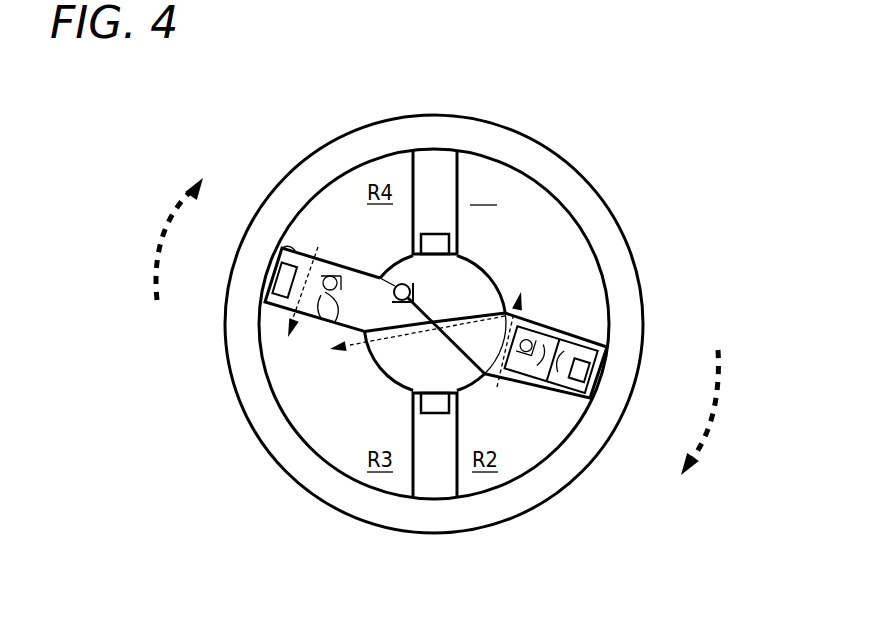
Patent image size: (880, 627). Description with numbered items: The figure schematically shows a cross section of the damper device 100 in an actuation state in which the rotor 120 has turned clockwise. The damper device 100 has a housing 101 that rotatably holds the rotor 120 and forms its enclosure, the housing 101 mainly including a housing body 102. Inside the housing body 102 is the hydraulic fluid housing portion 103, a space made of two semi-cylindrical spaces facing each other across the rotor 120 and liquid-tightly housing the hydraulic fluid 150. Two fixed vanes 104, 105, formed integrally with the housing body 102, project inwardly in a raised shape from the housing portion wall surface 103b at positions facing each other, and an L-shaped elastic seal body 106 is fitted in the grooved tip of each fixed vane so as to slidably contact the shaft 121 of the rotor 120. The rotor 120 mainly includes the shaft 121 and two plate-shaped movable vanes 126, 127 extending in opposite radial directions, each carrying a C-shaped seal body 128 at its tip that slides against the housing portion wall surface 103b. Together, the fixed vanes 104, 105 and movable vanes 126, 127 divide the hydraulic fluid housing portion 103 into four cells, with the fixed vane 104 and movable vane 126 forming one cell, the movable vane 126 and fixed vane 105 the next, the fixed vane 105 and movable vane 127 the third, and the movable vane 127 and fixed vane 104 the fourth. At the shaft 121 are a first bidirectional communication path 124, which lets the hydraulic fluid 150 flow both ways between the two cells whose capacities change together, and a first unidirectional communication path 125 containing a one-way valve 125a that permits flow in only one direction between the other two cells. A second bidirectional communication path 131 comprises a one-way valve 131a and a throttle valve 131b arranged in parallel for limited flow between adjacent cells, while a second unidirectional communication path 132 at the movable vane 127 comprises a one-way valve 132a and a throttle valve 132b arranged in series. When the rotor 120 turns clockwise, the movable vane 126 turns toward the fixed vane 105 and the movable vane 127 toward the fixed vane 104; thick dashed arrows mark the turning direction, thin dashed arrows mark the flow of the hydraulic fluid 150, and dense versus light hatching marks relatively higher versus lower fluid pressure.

The damper device 100 is at (278, 90).
The housing 101 is at (499, 118).
The housing body 102 is at (536, 135).
The hydraulic fluid housing portion 103 is at (306, 456).
The housing portion wall surface 103b is at (528, 462).
The fixed vane 104 is at (398, 152).
The fixed vane 105 is at (461, 485).
The seal body 106 is at (434, 232).
The rotor 120 is at (405, 394).
The shaft 121 is at (390, 375).
The first bidirectional communication path 124 is at (495, 290).
The first unidirectional communication path 125 is at (413, 290).
The one-way valve 125a is at (395, 285).
The movable vane 126 is at (576, 402).
The movable vane 127 is at (285, 245).
The seal body 128 is at (263, 283).
The second bidirectional communication path 131 is at (723, 257).
The one-way valve 131a is at (578, 330).
The throttle valve 131b is at (603, 350).
The second unidirectional communication path 132 is at (147, 338).
The one-way valve 132a is at (333, 322).
The throttle valve 132b is at (300, 316).
The hydraulic fluid 150 is at (535, 192).